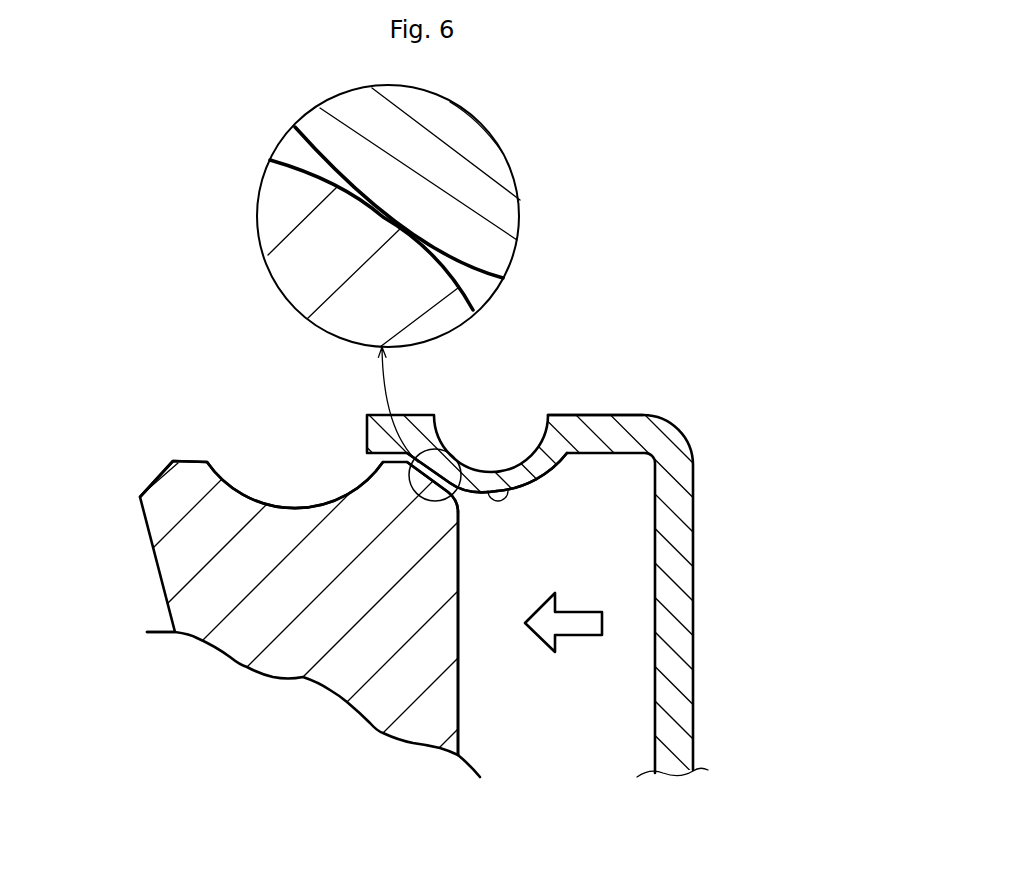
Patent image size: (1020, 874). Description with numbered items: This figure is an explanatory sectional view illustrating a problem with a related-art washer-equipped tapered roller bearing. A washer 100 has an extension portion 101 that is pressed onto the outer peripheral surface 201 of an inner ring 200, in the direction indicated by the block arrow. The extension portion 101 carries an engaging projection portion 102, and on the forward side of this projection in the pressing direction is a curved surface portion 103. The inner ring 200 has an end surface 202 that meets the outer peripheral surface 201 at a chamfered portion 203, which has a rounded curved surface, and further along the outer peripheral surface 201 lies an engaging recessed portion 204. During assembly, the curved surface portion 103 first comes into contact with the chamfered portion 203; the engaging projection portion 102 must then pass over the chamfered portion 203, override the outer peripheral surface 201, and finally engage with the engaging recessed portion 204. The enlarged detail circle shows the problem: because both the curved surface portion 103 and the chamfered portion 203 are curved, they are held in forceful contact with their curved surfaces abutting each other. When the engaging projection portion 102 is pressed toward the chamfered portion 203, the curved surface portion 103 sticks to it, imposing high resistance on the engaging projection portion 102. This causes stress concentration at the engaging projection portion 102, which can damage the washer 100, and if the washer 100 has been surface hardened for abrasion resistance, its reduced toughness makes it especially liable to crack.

The washer 100 is at (727, 560).
The extension portion 101 is at (602, 402).
The engaging projection portion 102 is at (554, 499).
The curved surface portion 103 is at (510, 490).
The inner ring 200 is at (126, 576).
The outer peripheral surface 201 is at (170, 452).
The end surface 202 is at (458, 685).
The chamfered portion 203 is at (455, 497).
The engaging recessed portion 204 is at (286, 508).